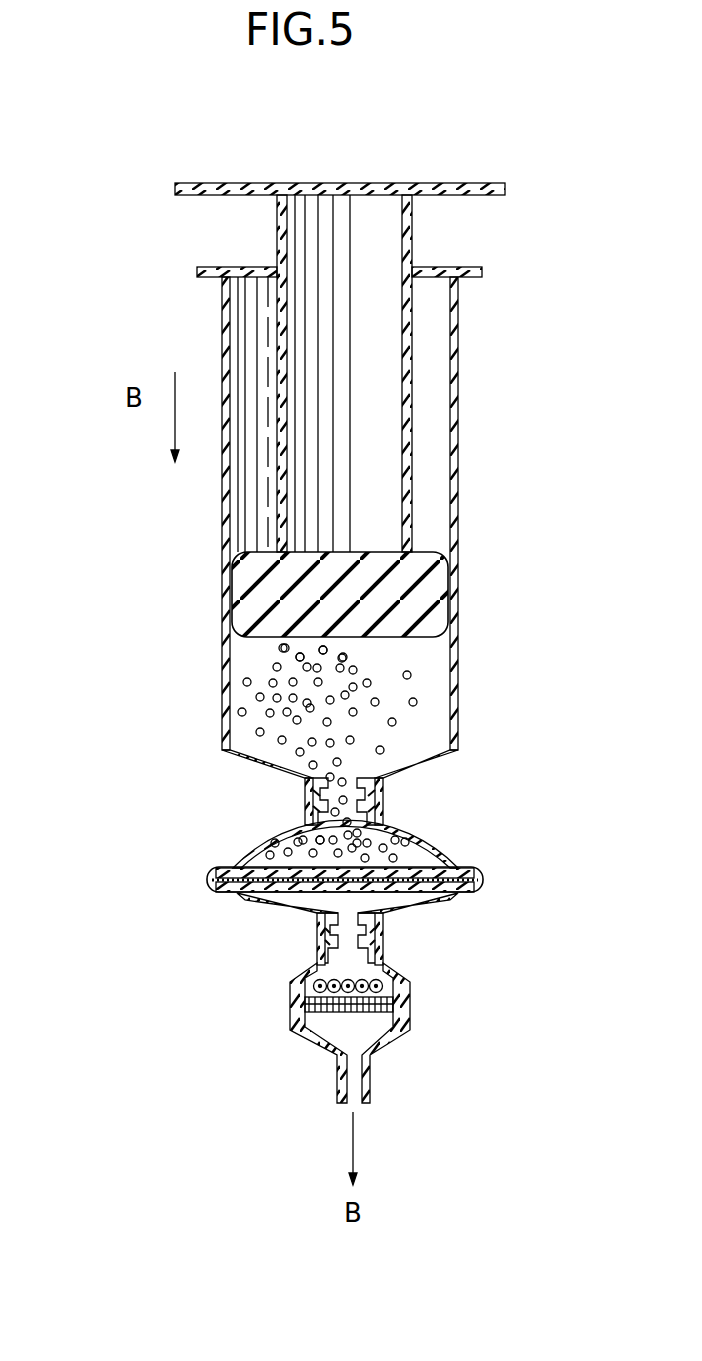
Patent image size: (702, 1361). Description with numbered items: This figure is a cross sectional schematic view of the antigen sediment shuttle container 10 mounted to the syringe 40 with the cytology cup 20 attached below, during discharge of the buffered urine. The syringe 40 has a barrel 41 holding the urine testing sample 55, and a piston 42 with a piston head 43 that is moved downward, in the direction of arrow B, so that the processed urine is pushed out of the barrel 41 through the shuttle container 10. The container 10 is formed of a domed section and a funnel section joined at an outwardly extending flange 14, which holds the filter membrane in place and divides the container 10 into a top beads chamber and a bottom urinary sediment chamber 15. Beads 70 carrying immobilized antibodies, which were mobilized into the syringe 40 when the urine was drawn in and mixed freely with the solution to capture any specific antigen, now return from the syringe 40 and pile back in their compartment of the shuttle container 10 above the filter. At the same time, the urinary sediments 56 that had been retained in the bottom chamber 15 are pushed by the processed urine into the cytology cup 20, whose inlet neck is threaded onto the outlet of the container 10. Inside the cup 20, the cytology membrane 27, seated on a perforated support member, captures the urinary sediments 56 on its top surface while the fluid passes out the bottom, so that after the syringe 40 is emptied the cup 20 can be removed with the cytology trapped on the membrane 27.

The antigen sediment shuttle container 10 is at (198, 878).
The outwardly extending flange 14 is at (428, 823).
The urinary sediment chamber 15 is at (403, 899).
The cytology cup 20 is at (282, 1000).
The cytology membrane 27 is at (412, 1002).
The syringe 40 is at (190, 270).
The barrel 41 is at (466, 330).
The piston 42 is at (420, 218).
The piston head 43 is at (465, 578).
The urine testing sample 55 is at (432, 667).
The urinary sediments 56 is at (378, 977).
The beads 70 is at (408, 718).